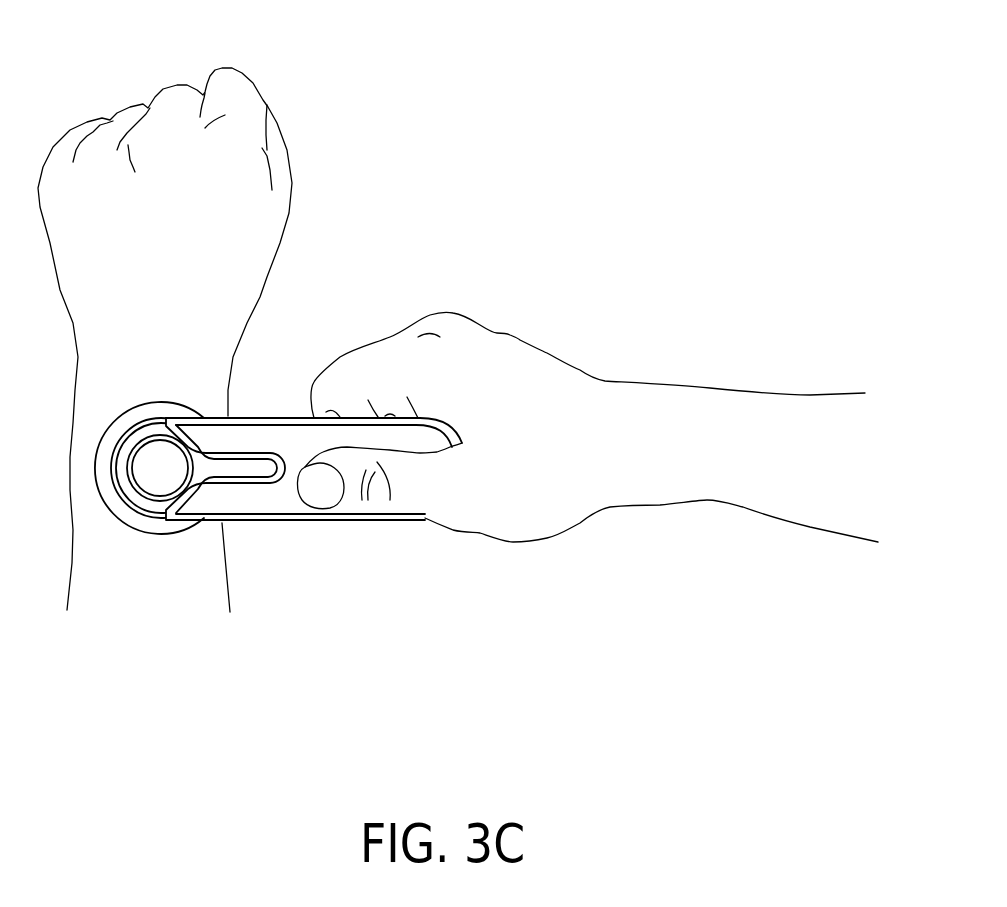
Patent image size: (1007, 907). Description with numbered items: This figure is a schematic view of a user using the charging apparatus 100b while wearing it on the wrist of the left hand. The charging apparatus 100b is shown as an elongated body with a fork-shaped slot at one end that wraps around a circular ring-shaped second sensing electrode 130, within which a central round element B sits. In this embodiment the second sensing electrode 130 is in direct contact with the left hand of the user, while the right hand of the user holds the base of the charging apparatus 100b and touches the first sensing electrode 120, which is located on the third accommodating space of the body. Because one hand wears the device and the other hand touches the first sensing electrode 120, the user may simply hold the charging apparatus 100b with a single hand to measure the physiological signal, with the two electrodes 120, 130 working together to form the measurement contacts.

The charging apparatus 100b is at (267, 479).
The first sensing electrode 120 is at (277, 442).
The second sensing electrode 130 is at (123, 427).
The button B is at (155, 473).